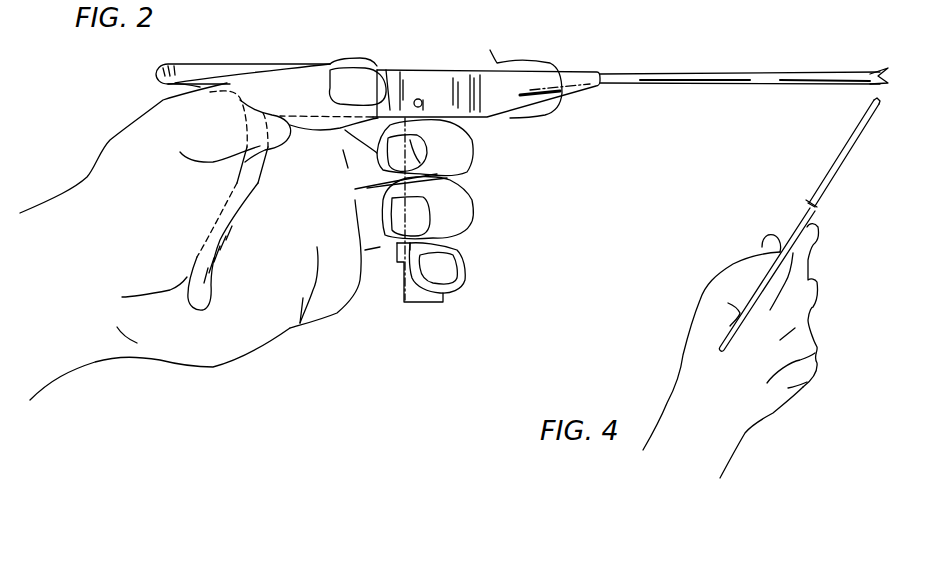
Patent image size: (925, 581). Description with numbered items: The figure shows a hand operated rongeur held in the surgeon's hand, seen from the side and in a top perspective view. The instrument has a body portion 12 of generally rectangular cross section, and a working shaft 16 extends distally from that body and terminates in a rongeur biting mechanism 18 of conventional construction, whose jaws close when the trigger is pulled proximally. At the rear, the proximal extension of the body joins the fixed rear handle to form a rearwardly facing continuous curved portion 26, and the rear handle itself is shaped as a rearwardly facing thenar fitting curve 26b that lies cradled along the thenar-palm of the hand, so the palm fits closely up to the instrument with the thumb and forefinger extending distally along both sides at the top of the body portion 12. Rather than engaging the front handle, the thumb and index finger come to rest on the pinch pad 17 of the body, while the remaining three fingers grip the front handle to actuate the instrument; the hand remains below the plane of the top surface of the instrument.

In FIG. 2, the body portion 12 is at (497, 70).
In FIG. 4, the body portion 12 is at (784, 230).
In FIG. 2, the working shaft 16 is at (669, 75).
In FIG. 4, the working shaft 16 is at (830, 176).
In FIG. 4, the pinch pad 17 is at (770, 255).
In FIG. 4, the rongeur biting mechanism 18 is at (878, 106).
In FIG. 2, the rearwardly facing continuous curved portion 26 is at (236, 94).
In FIG. 2, the thenar fitting curve 26b is at (230, 187).